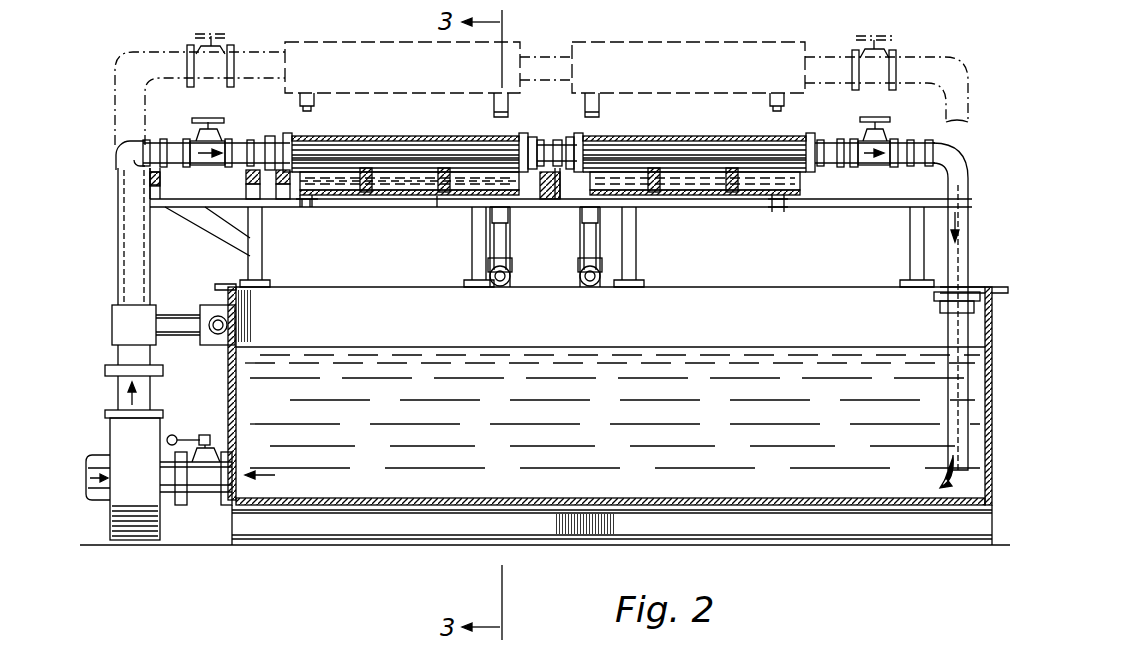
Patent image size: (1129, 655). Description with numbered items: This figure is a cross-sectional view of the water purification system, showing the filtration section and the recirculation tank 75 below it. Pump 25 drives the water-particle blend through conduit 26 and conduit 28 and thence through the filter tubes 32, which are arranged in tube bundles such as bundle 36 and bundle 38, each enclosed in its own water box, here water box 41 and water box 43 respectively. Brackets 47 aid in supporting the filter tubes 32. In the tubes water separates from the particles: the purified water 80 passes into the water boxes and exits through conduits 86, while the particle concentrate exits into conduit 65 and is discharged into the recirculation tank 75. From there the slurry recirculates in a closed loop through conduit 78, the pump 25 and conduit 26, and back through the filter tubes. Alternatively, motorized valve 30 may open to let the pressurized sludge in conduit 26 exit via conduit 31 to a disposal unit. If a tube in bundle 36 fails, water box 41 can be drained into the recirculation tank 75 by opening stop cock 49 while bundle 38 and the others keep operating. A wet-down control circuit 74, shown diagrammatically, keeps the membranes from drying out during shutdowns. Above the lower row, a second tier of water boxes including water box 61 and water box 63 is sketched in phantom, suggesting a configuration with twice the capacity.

The pump 25 is at (148, 505).
The conduit 26 is at (136, 246).
The conduit 28 is at (170, 143).
The motorized valve 30 is at (210, 306).
The conduit 31 is at (218, 342).
The filter tubes 32 is at (404, 150).
The tube bundle 36 is at (436, 150).
The tube bundle 38 is at (697, 150).
The water box 41 is at (384, 136).
The water box 43 is at (660, 136).
The brackets 47 is at (432, 190).
The stop cock 49 is at (320, 200).
The water box 61 is at (374, 42).
The water box 63 is at (688, 42).
The conduit 65 is at (952, 172).
The wet-down control circuit 74 is at (228, 415).
The recirculation tank 75 is at (972, 292).
The conduit 78 is at (205, 482).
The purified water 80 is at (362, 186).
The conduits 86 is at (590, 240).